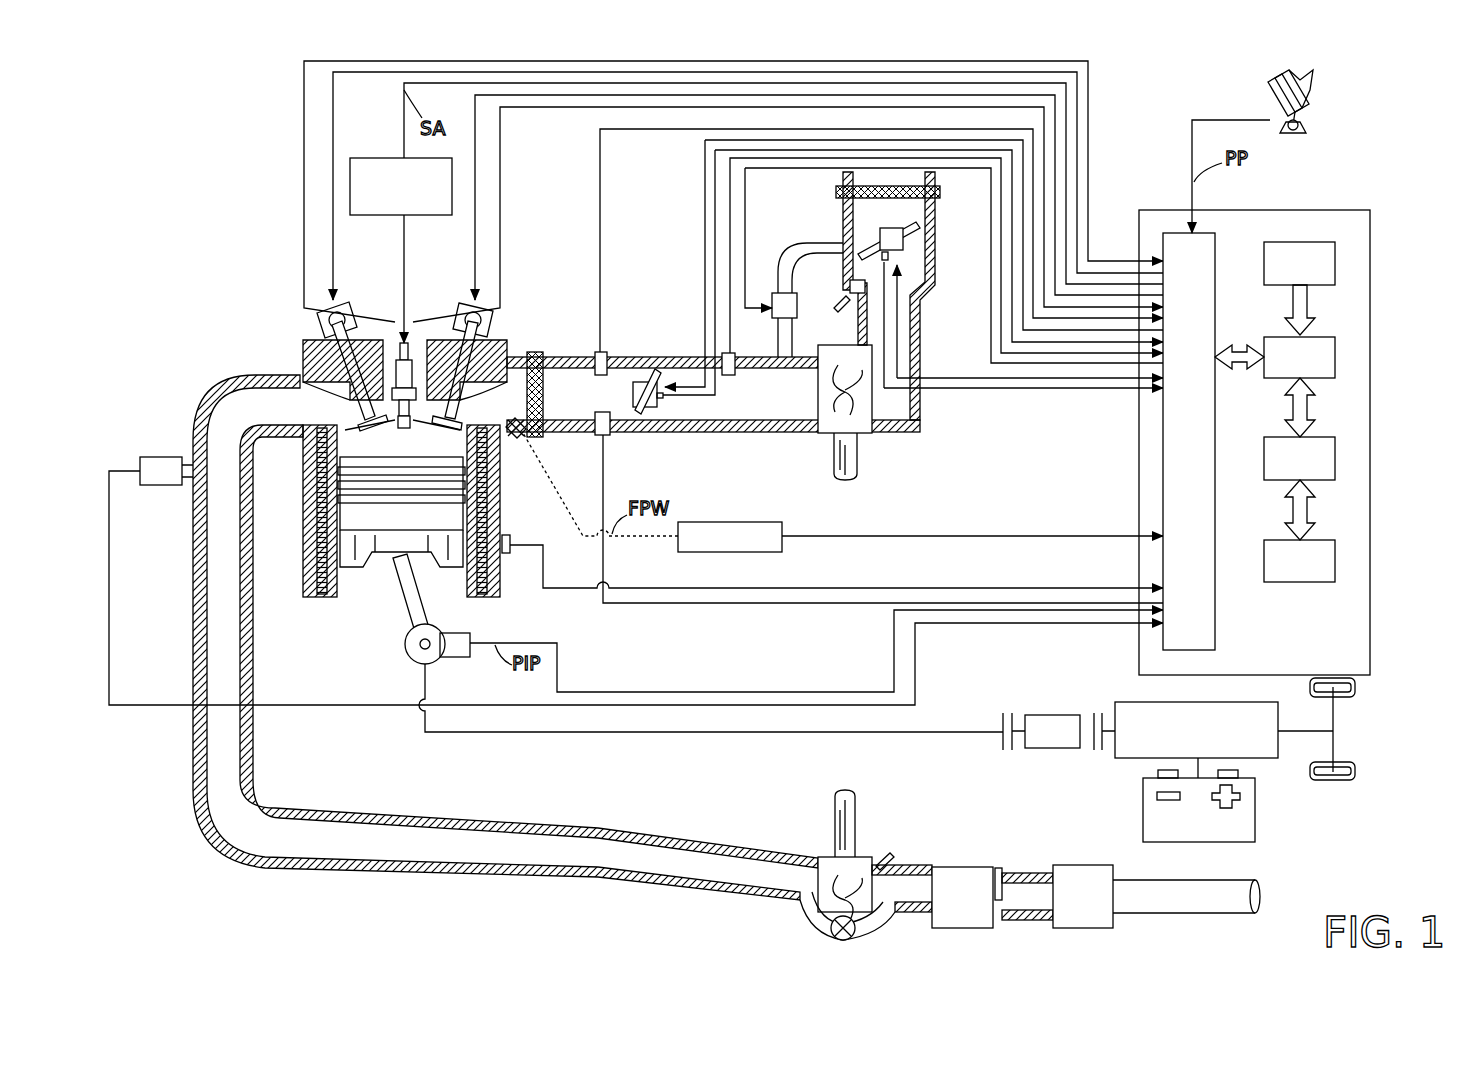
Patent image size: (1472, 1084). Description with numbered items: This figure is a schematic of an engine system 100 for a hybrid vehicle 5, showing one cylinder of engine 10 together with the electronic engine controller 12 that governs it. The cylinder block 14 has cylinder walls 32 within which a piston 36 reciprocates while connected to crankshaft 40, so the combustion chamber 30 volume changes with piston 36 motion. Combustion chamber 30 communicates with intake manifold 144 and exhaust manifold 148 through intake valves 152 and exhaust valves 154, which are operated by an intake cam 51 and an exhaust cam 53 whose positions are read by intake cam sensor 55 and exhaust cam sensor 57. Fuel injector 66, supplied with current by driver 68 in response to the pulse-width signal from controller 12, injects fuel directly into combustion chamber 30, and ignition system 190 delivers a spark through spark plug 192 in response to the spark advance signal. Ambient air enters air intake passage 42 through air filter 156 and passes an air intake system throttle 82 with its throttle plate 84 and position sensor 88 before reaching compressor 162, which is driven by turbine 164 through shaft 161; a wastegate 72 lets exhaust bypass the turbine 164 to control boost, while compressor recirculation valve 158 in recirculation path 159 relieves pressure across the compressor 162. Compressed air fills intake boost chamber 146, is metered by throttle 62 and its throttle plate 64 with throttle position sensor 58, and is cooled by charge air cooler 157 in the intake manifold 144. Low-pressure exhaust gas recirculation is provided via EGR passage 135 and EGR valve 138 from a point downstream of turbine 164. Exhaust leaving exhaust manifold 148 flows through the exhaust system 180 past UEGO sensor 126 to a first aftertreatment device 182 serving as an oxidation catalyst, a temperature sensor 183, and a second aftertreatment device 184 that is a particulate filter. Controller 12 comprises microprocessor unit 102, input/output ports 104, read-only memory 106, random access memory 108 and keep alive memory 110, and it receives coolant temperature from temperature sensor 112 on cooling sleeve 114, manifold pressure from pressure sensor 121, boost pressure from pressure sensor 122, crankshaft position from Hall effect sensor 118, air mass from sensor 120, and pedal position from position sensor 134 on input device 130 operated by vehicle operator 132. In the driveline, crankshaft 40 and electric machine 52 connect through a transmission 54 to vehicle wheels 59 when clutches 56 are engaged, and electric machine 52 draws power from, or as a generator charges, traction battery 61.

The engine system 100 is at (152, 122).
The engine 10 is at (232, 272).
The electronic engine controller 12 is at (1362, 211).
The vehicle 5 is at (1380, 712).
The cylinder block 14 is at (300, 500).
The combustion chamber 30 is at (305, 540).
The cylinder walls 32 is at (342, 600).
The piston 36 is at (388, 578).
The crankshaft 40 is at (412, 660).
The air intake passage 42 is at (889, 296).
The intake cam 51 is at (470, 300).
The electric machine 52 is at (1055, 748).
The exhaust cam 53 is at (340, 302).
The transmission 54 is at (1258, 758).
The intake cam sensor 55 is at (490, 318).
The clutch 56 is at (1003, 715).
The exhaust cam sensor 57 is at (320, 318).
The throttle position sensor 58 is at (662, 410).
The vehicle wheels 59 is at (1335, 782).
The traction battery 61 is at (1190, 842).
The throttle 62 is at (645, 375).
The throttle plate 64 is at (660, 393).
The fuel injector 66 is at (516, 438).
The driver 68 is at (765, 522).
The wastegate 72 is at (830, 930).
The air intake system throttle 82 is at (858, 240).
The throttle plate 84 is at (850, 220).
The position sensor 88 is at (838, 240).
The microprocessor unit 102 is at (1337, 355).
The input/output ports 104 is at (1217, 240).
The read-only memory 106 is at (1337, 262).
The random access memory 108 is at (1337, 455).
The keep alive memory 110 is at (1337, 560).
The temperature sensor 112 is at (508, 535).
The cooling sleeve 114 is at (495, 580).
The Hall effect sensor 118 is at (455, 657).
The air mass sensor 120 is at (604, 435).
The pressure sensor 121 is at (602, 350).
The pressure sensor 122 is at (730, 353).
The UEGO sensor 126 is at (142, 460).
The input device 130 is at (1268, 95).
The vehicle operator 132 is at (1310, 80).
The position sensor 134 is at (1300, 130).
The EGR passage 135 is at (840, 308).
The EGR valve 138 is at (850, 285).
The intake manifold 144 is at (713, 394).
The intake boost chamber 146 is at (740, 393).
The exhaust manifold 148 is at (505, 637).
The intake valves 152 is at (500, 396).
The exhaust valves 154 is at (330, 390).
The air filter 156 is at (940, 192).
The charge air cooler 157 is at (545, 438).
The compressor recirculation valve 158 is at (772, 293).
The compressor recirculation path 159 is at (795, 340).
The shaft 161 is at (862, 470).
The compressor 162 is at (872, 432).
The turbine 164 is at (822, 857).
The exhaust system 180 is at (455, 882).
The first aftertreatment device 182 is at (962, 897).
The temperature sensor 183 is at (1000, 868).
The second aftertreatment device 184 is at (1156, 896).
The ignition system 190 is at (390, 160).
The spark plug 192 is at (409, 335).